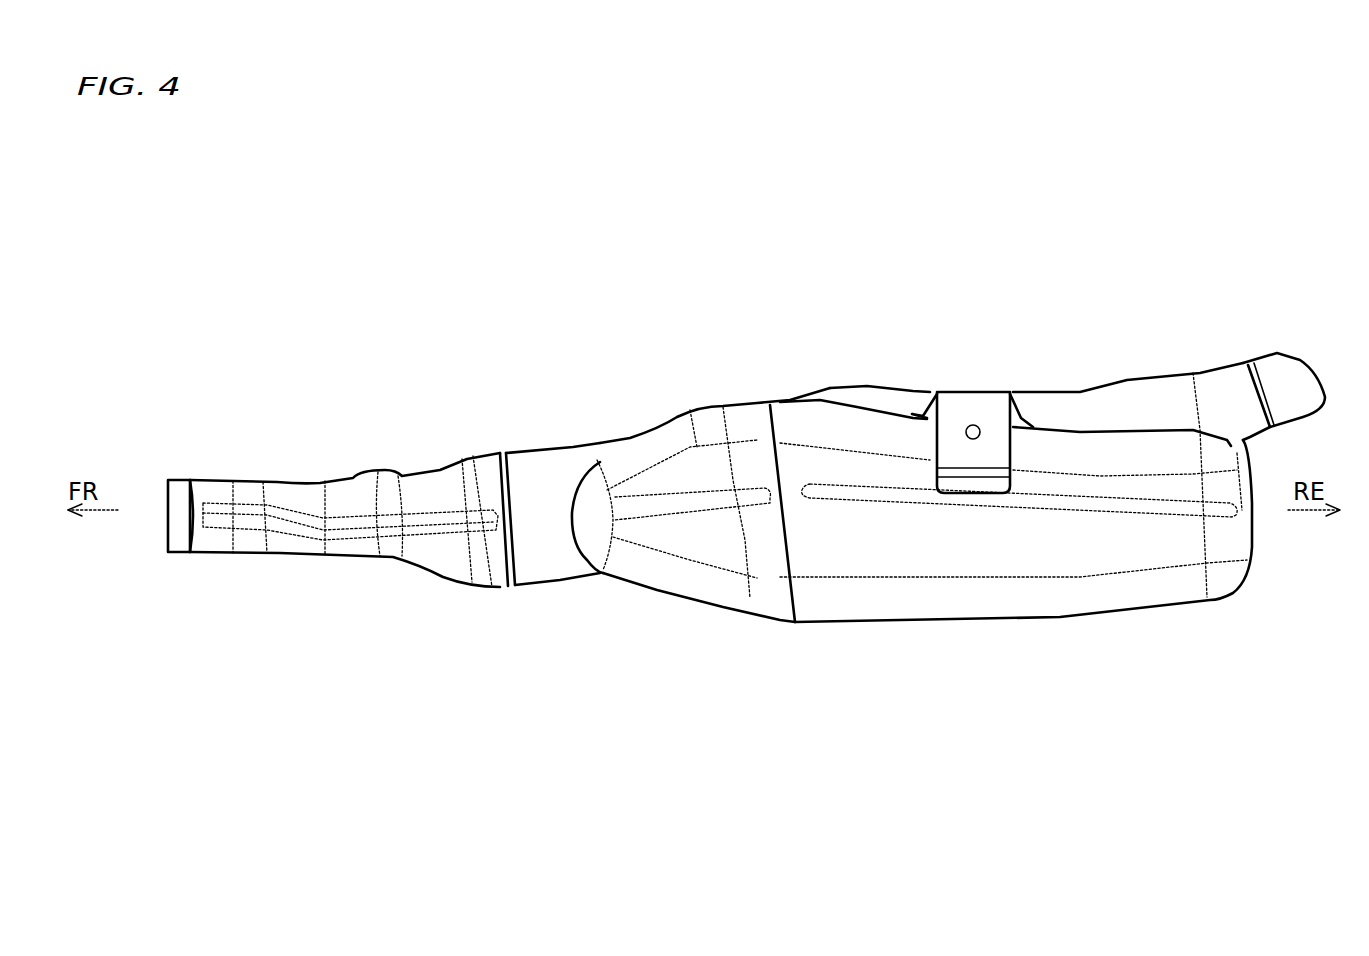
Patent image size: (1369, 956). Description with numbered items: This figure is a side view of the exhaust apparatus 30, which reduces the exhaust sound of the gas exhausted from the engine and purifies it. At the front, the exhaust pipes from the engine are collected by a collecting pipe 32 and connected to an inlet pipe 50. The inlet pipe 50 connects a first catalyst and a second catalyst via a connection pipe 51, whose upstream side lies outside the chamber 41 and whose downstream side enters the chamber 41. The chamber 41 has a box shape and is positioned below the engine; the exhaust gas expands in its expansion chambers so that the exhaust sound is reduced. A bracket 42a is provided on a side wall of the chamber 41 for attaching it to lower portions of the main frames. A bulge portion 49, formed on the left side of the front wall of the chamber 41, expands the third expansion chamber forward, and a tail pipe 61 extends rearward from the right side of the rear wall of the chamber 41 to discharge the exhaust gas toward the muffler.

The exhaust apparatus 30 is at (290, 306).
The collecting pipe 32 is at (283, 477).
The inlet pipe 50 is at (528, 442).
The connection pipe 51 is at (560, 442).
The bulge portion 49 is at (671, 590).
The chamber 41 is at (1030, 386).
The bracket 42a is at (955, 396).
The tail pipe 61 is at (1280, 351).